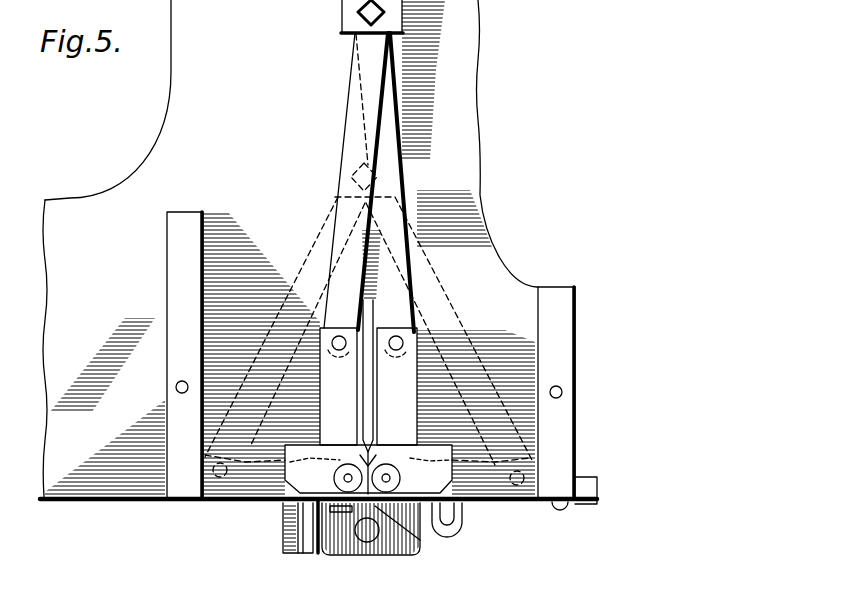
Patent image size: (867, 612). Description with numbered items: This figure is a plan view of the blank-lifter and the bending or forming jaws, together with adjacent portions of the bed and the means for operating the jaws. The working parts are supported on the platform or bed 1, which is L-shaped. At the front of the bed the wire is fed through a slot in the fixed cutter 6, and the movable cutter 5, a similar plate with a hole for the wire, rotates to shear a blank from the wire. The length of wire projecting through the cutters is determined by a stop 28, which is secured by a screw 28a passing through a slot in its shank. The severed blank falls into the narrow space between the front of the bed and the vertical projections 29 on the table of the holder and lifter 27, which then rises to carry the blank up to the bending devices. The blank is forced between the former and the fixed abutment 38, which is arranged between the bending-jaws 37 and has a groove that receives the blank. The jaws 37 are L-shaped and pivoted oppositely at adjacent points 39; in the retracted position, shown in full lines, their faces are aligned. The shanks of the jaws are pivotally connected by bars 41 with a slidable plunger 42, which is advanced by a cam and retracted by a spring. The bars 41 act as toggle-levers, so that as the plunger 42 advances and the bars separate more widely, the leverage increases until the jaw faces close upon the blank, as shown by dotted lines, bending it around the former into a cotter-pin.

The platform or bed 1 is at (319, 249).
The movable cutter 5 is at (290, 543).
The fixed cutter 6 is at (310, 555).
The holder and lifter 27 is at (369, 544).
The stop 28 is at (318, 504).
The screw 28a is at (561, 525).
The vertical projections 29 is at (462, 528).
The bending-jaws 37 is at (368, 386).
The fixed abutment 38 is at (371, 393).
The pivot points 39 is at (368, 464).
The bars 41 is at (352, 143).
The slidable plunger 42 is at (342, 17).